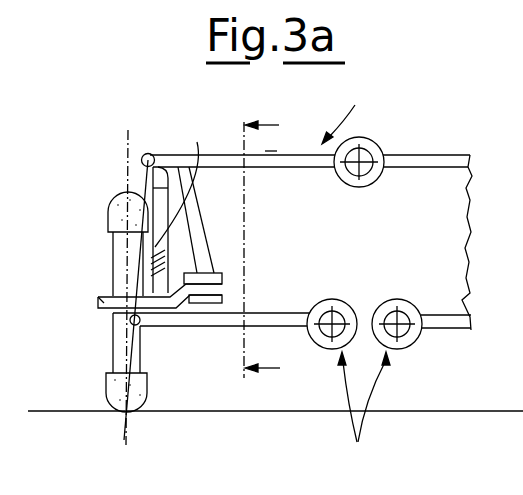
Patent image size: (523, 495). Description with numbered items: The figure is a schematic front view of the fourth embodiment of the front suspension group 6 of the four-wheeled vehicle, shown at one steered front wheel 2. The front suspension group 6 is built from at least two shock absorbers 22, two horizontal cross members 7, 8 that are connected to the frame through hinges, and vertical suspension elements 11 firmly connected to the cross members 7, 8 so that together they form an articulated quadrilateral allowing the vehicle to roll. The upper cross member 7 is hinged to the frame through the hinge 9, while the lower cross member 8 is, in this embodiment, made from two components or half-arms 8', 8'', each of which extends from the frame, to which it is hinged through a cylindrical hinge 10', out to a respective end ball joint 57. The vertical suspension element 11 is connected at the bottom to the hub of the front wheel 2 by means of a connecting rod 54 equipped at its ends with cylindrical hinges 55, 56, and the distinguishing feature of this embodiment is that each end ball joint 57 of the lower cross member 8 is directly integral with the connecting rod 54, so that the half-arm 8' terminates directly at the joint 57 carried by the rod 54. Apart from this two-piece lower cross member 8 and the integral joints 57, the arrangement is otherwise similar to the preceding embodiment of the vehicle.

The steered front wheel 2 is at (136, 393).
The front suspension group 6 is at (346, 114).
The horizontal cross member 7 is at (440, 160).
The lower cross member 8 is at (364, 411).
The half-arm 8' is at (211, 337).
The half-arm 8'' is at (446, 344).
The hinge 9 is at (362, 158).
The cylindrical hinge 10' is at (375, 301).
The vertical suspension element 11 is at (193, 237).
The shock absorber 22 is at (185, 184).
The connecting rod 54 is at (145, 298).
The cylindrical hinge 55 is at (105, 303).
The cylindrical hinge 56 is at (223, 290).
The end ball joint 57 is at (152, 156).